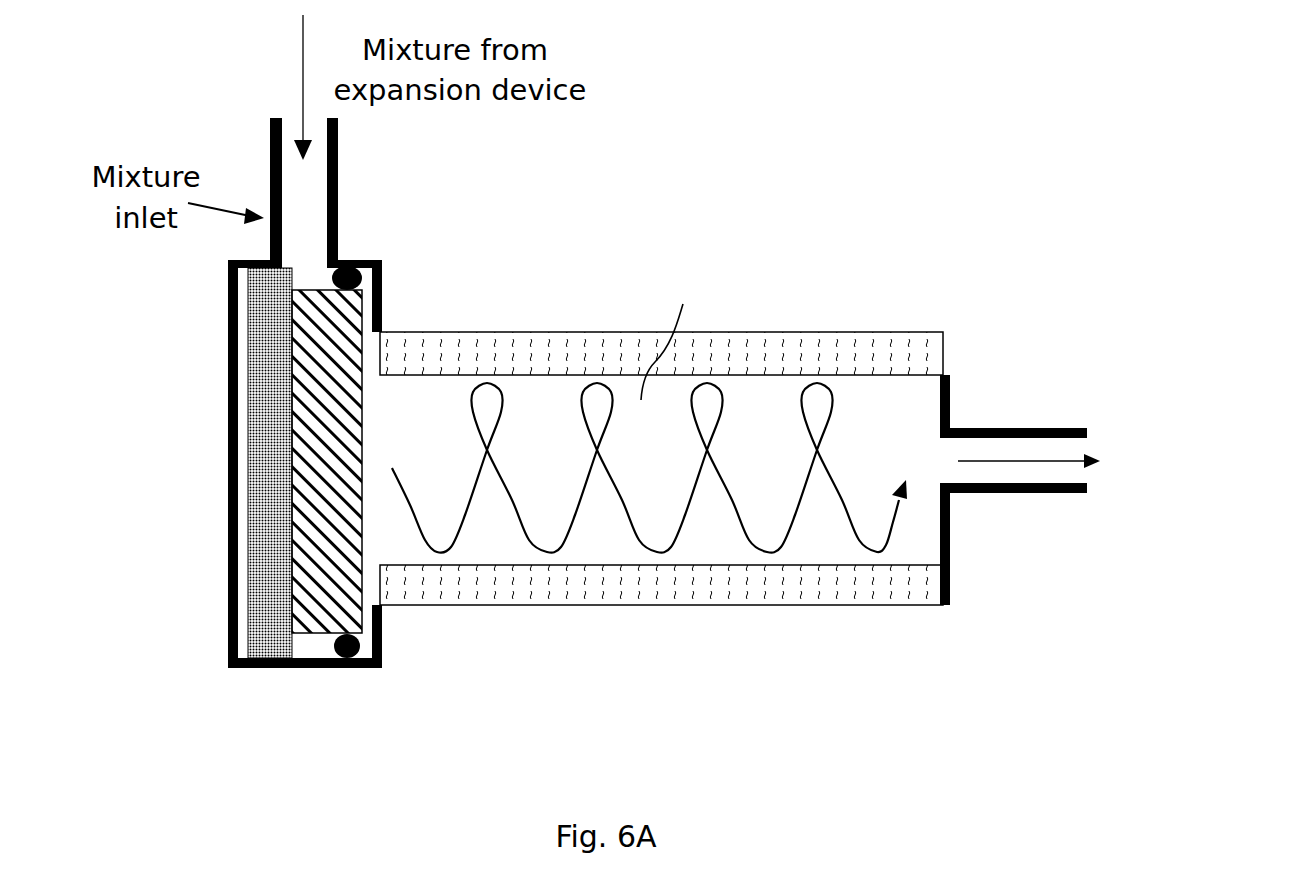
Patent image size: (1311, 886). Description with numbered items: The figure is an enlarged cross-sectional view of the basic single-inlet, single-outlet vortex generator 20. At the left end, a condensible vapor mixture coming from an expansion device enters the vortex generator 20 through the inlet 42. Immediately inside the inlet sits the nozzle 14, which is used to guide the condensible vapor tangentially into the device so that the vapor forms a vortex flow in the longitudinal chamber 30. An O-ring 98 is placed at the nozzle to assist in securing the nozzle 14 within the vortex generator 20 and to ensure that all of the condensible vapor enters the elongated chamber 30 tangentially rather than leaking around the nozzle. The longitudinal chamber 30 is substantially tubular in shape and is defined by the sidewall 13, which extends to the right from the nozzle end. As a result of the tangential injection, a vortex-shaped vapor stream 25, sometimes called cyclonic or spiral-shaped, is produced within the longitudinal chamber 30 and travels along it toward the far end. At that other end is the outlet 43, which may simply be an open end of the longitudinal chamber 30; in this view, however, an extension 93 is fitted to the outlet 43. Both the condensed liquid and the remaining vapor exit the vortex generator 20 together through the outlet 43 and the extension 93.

The vortex generator 20 is at (166, 390).
The inlet 42 is at (338, 181).
The O-ring 98 is at (353, 256).
The nozzle 14 is at (307, 548).
The longitudinal chamber 30 is at (757, 432).
The sidewall 13 is at (727, 588).
The vortex-shaped vapor stream 25 is at (455, 535).
The outlet 43 is at (961, 428).
The extension 93 is at (1033, 428).